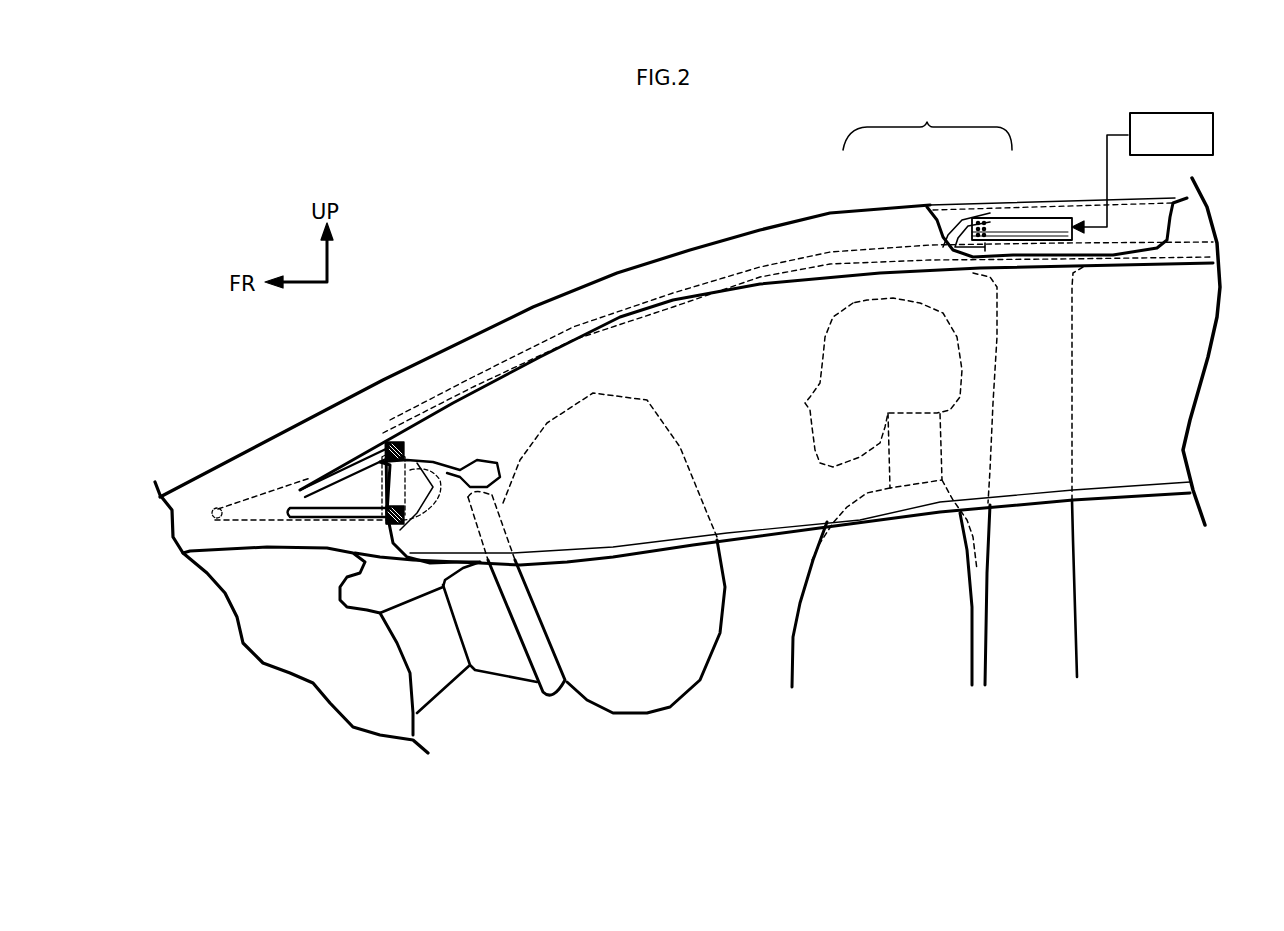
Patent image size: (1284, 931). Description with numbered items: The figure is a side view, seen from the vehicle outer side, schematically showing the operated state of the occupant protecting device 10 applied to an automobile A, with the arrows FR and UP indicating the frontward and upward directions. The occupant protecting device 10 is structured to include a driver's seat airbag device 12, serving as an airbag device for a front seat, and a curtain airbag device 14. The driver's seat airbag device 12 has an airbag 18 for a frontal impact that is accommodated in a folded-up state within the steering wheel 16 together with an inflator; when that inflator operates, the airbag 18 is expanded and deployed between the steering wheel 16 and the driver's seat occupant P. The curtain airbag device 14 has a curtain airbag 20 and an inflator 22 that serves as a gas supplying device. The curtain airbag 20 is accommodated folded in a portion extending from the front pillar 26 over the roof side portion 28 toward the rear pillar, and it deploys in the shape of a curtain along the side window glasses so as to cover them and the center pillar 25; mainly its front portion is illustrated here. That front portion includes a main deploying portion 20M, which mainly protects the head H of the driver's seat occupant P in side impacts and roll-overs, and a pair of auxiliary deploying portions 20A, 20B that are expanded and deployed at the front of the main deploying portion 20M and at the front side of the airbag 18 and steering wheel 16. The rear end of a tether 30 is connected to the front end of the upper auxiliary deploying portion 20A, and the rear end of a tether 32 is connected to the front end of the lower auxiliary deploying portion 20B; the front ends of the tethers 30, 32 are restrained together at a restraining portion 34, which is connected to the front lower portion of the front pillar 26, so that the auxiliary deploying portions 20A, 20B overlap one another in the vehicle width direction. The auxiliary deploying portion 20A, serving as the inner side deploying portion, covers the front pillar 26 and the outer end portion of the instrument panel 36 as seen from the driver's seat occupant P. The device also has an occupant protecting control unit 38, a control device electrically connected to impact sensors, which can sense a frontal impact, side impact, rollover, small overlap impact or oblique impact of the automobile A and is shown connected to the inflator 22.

The occupant protecting device 10 is at (740, 575).
The driver's seat airbag device 12 is at (590, 705).
The curtain airbag device 14 is at (927, 119).
The steering wheel 16 is at (530, 633).
The airbag for a frontal impact 18 is at (648, 683).
The curtain airbag 20 is at (786, 330).
The auxiliary deploying portion 20A is at (422, 490).
The auxiliary deploying portion 20B is at (390, 547).
The main deploying portion 20M is at (680, 343).
The inflator 22 is at (1026, 228).
The center pillar 25 is at (1057, 553).
The front pillar 26 is at (535, 320).
The roof side portion 28 is at (1060, 212).
The tether 30 is at (357, 460).
The tether 32 is at (312, 520).
The restraining portion 34 is at (210, 505).
The instrument panel 36 is at (327, 687).
The occupant protecting ECU 38 is at (1213, 132).
The automobile A is at (801, 207).
The head H is at (898, 323).
The driver's seat occupant P is at (795, 611).